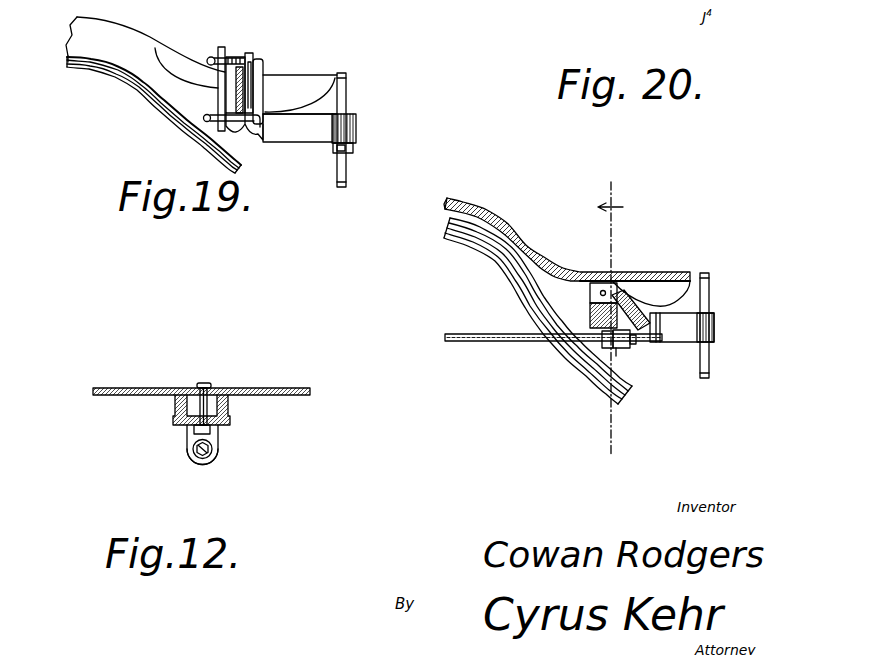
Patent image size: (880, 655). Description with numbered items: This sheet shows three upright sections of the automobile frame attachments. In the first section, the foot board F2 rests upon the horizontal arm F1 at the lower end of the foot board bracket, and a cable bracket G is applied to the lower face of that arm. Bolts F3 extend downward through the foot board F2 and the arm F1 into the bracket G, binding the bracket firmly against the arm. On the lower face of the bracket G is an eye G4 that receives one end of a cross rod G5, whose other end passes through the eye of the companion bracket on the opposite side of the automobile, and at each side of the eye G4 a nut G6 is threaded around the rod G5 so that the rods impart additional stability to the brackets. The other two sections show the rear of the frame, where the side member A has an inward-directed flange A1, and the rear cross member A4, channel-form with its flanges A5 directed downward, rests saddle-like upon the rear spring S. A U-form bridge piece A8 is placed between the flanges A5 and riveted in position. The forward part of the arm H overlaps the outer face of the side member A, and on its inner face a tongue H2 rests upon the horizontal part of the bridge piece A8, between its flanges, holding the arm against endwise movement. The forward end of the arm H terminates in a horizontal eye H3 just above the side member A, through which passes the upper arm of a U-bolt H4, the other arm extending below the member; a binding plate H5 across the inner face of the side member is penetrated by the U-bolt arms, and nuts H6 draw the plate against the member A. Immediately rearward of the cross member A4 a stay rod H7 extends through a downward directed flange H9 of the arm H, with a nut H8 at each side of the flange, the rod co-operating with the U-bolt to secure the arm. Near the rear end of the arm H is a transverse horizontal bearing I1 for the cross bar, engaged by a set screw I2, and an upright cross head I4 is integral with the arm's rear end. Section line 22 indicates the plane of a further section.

In FIG. 19, the frame side member A is at (155, 48).
In FIG. 19, the flange A1 is at (231, 66).
In FIG. 19, the rear cross member A4 is at (48, 32).
In FIG. 20, the rear cross member A4 is at (503, 221).
In FIG. 19, the flange A5 is at (67, 50).
In FIG. 20, the flange A5 is at (677, 289).
In FIG. 20, the U-form bridge piece A8 is at (619, 280).
In FIG. 19, the rear spring S is at (150, 112).
In FIG. 20, the rear spring S is at (484, 244).
In FIG. 19, the arm H is at (308, 135).
In FIG. 20, the arm H is at (677, 335).
In FIG. 20, the tongue H2 is at (620, 287).
In FIG. 19, the horizontal eye H3 is at (252, 53).
In FIG. 19, the U-bolt H4 is at (265, 82).
In FIG. 19, the binding plate H5 is at (214, 108).
In FIG. 19, the nut H6 is at (209, 57).
In FIG. 20, the stay rod H7 is at (493, 328).
In FIG. 20, the nut H8 is at (622, 380).
In FIG. 20, the downward directed flange H9 is at (616, 350).
In FIG. 19, the transverse horizontal bearing I1 is at (356, 147).
In FIG. 19, the set screw I2 is at (347, 150).
In FIG. 19, the upright cross head I4 is at (343, 97).
In FIG. 20, the upright cross head I4 is at (709, 362).
In FIG. 20, the section line 22 is at (610, 316).
In FIG. 12, the horizontal arm F1 is at (229, 406).
In FIG. 12, the foot board F2 is at (118, 388).
In FIG. 12, the bolt F3 is at (207, 385).
In FIG. 12, the cable bracket G is at (177, 418).
In FIG. 12, the eye G4 is at (190, 445).
In FIG. 12, the cross rod G5 is at (214, 462).
In FIG. 12, the nut G6 is at (218, 447).